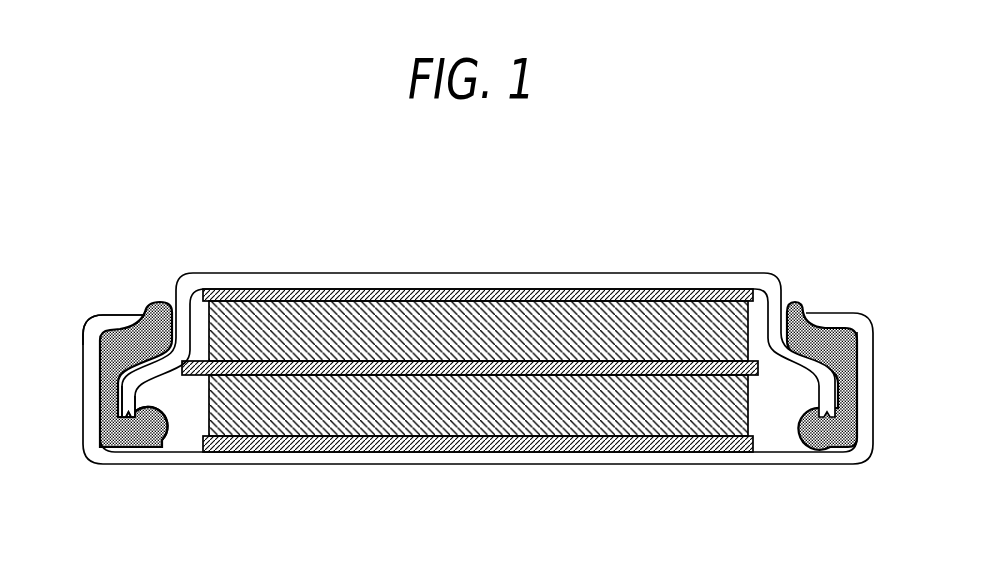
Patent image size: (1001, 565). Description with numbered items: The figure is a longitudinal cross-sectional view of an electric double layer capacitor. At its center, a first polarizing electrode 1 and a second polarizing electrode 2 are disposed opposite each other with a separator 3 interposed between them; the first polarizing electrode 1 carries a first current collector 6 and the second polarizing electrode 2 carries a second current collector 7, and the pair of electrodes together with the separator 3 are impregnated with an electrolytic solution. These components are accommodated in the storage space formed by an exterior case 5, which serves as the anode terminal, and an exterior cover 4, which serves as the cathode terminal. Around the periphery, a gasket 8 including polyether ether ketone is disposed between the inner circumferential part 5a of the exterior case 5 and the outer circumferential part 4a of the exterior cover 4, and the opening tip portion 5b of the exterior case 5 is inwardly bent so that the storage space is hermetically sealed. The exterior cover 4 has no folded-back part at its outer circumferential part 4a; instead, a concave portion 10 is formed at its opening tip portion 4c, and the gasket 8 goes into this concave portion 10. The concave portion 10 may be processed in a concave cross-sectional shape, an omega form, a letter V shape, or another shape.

The first polarizing electrode 1 is at (526, 325).
The second polarizing electrode 2 is at (548, 436).
The separator 3 is at (760, 365).
The exterior cover 4 is at (259, 278).
The outer circumferential part 4a is at (115, 393).
The opening tip portion 4c is at (117, 430).
The exterior case 5 is at (263, 458).
The inner circumferential part 5a is at (102, 366).
The opening tip portion 5b is at (118, 322).
The first current collector 6 is at (393, 300).
The second current collector 7 is at (407, 443).
The gasket 8 is at (845, 362).
The concave portion 10 is at (125, 418).